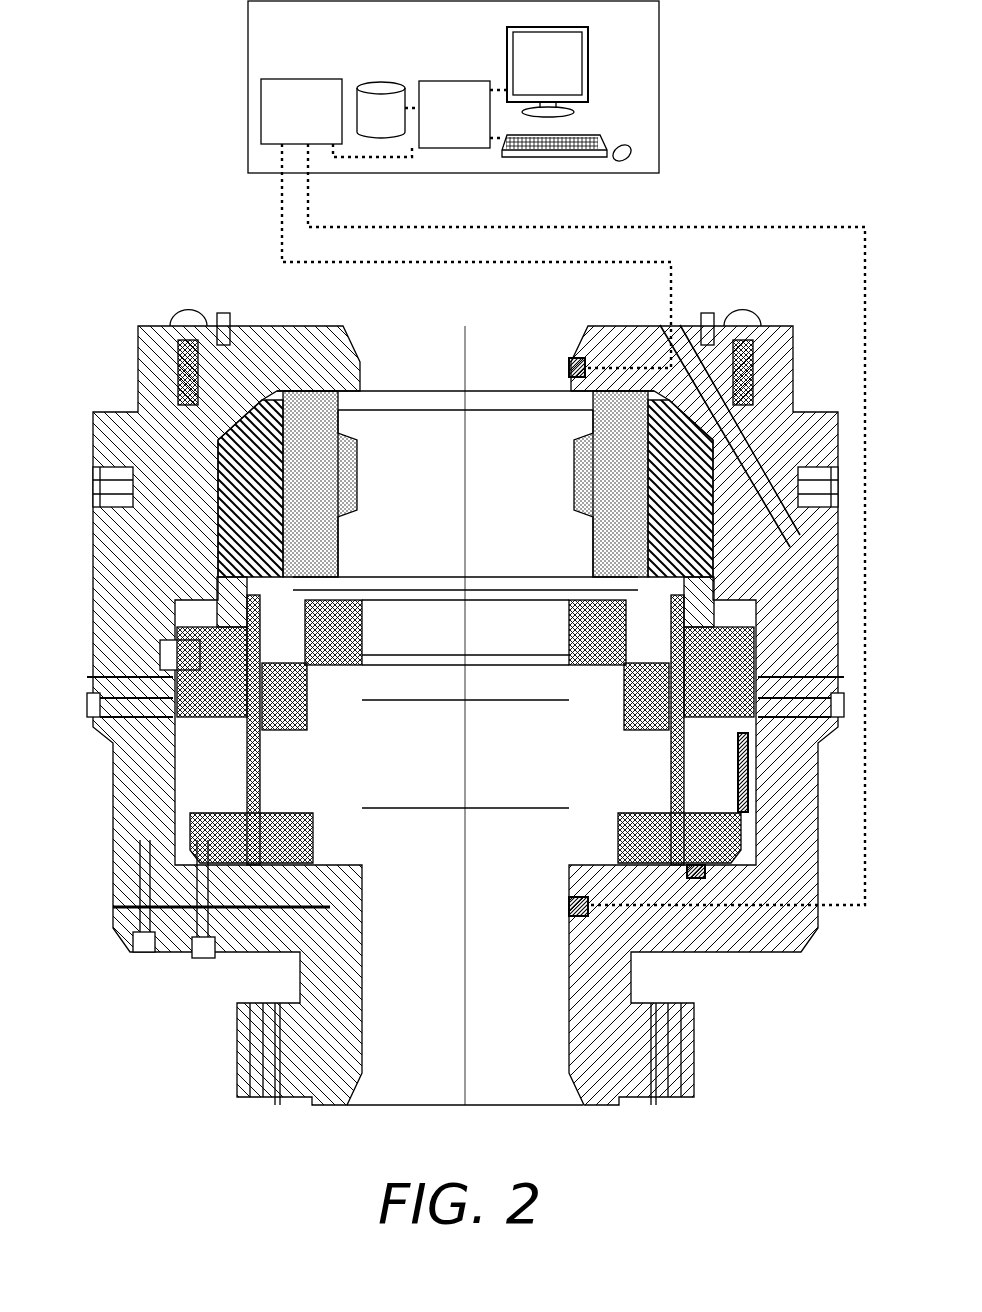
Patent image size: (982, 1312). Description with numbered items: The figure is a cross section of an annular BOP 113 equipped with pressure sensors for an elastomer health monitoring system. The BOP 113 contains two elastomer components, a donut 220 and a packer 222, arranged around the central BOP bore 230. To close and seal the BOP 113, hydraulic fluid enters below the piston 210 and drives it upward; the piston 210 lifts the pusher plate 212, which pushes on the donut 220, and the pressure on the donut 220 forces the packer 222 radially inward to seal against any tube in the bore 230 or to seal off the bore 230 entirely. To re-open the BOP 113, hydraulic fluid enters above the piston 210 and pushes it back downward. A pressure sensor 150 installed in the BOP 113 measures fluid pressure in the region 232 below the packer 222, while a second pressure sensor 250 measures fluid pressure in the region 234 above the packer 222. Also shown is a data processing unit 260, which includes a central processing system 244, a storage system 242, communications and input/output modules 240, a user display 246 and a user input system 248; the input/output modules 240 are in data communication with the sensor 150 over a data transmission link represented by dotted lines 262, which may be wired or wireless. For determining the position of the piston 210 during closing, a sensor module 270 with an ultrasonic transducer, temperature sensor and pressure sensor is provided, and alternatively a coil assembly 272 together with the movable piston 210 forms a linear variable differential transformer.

The annular BOP 113 is at (158, 160).
The pressure sensor 150 is at (568, 906).
The piston 210 is at (222, 812).
The pusher plate 212 is at (240, 617).
The donut 220 is at (223, 462).
The packer 222 is at (343, 452).
The BOP bore 230 is at (480, 503).
The region below packer 232 is at (526, 901).
The region above packer 234 is at (529, 376).
The communications and input/output modules 240 is at (318, 120).
The storage system 242 is at (400, 120).
The central processing system 244 is at (473, 121).
The user display 246 is at (567, 75).
The user input system 248 is at (608, 120).
The second pressure sensor 250 is at (573, 357).
The data processing unit 260 is at (646, 43).
The data transmission link 262 is at (672, 277).
The sensor module 270 is at (706, 872).
The coil assembly 272 is at (748, 778).